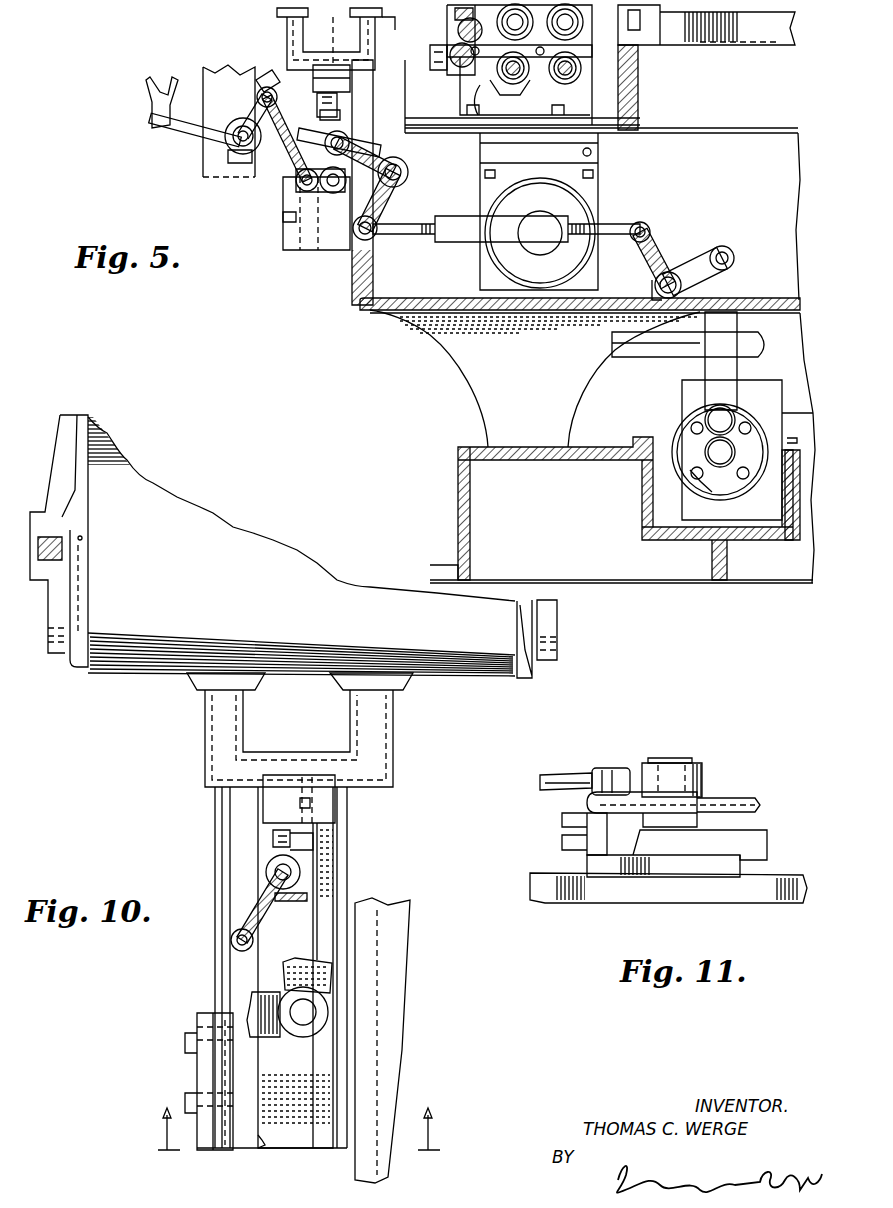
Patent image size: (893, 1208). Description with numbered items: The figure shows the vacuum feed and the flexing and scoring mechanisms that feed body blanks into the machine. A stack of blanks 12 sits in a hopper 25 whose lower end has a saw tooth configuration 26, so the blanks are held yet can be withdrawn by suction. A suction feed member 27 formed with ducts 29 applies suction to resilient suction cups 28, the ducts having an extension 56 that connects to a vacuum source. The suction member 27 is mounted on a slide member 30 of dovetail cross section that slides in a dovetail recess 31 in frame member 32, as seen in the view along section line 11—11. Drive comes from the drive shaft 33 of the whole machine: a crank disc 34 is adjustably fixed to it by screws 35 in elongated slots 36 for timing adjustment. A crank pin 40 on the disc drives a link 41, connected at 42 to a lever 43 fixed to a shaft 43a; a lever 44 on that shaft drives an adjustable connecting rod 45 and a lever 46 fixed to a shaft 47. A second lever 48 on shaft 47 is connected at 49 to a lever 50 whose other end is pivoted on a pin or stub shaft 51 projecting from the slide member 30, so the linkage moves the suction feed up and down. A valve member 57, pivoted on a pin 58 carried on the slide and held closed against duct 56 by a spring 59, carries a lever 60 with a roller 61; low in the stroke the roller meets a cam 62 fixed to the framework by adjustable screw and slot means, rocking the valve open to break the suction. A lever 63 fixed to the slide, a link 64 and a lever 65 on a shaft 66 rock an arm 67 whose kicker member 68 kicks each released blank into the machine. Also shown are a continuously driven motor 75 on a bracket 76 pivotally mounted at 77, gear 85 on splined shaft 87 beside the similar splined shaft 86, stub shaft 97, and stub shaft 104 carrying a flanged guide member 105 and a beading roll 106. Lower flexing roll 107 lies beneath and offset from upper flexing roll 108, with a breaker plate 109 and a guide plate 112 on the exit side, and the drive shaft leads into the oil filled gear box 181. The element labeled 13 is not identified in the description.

In FIG. 10, the section line 11 is at (182, 760).
In FIG. 10, the body blank 12 is at (105, 672).
In FIG. 5, the upper bar 13 is at (396, 15).
In FIG. 10, the hopper 25 is at (557, 637).
In FIG. 10, the saw tooth configuration 26 is at (78, 667).
In FIG. 5, the suction feed member 27 is at (283, 34).
In FIG. 10, the suction feed member 27 is at (393, 749).
In FIG. 5, the suction cups 28 is at (277, 13).
In FIG. 10, the suction cups 28 is at (187, 680).
In FIG. 5, the ducts 29 is at (362, 40).
In FIG. 10, the ducts 29 is at (222, 717).
In FIG. 5, the slide member 30 is at (322, 248).
In FIG. 10, the slide member 30 is at (288, 1152).
In FIG. 11, the slide member 30 is at (650, 865).
In FIG. 5, the dovetail recess 31 is at (318, 240).
In FIG. 10, the dovetail recess 31 is at (265, 1152).
In FIG. 11, the dovetail recess 31 is at (700, 843).
In FIG. 5, the frame member 32 is at (356, 252).
In FIG. 10, the frame member 32 is at (343, 1145).
In FIG. 11, the frame member 32 is at (690, 880).
In FIG. 5, the drive shaft 33 is at (708, 450).
In FIG. 5, the crank disc 34 is at (760, 412).
In FIG. 5, the screws 35 is at (621, 496).
In FIG. 5, the elongated slots 36 is at (690, 465).
In FIG. 5, the crank pin 40 is at (708, 418).
In FIG. 5, the link 41 is at (745, 327).
In FIG. 5, the pivot connection 42 is at (735, 255).
In FIG. 5, the link or lever 43 is at (700, 265).
In FIG. 5, the shaft 43a is at (652, 292).
In FIG. 5, the lever 44 is at (645, 262).
In FIG. 5, the adjustable connecting rod 45 is at (452, 246).
In FIG. 5, the lever 46 is at (392, 198).
In FIG. 5, the shaft 47 is at (410, 170).
In FIG. 5, the second lever 48 is at (398, 146).
In FIG. 5, the pivot connection 49 is at (342, 138).
In FIG. 5, the lever 50 is at (330, 165).
In FIG. 10, the lever 50 is at (305, 966).
In FIG. 11, the lever 50 is at (703, 773).
In FIG. 5, the pin or stub shaft 51 is at (330, 190).
In FIG. 10, the pin or stub shaft 51 is at (305, 1022).
In FIG. 11, the pin or stub shaft 51 is at (672, 758).
In FIG. 5, the extension 56 is at (350, 80).
In FIG. 10, the extension 56 is at (337, 837).
In FIG. 5, the valve member 57 is at (320, 98).
In FIG. 10, the valve member 57 is at (276, 838).
In FIG. 5, the pin 58 is at (322, 106).
In FIG. 10, the pin 58 is at (273, 872).
In FIG. 10, the spring 59 is at (287, 903).
In FIG. 5, the lever 60 is at (258, 114).
In FIG. 10, the lever 60 is at (260, 905).
In FIG. 5, the roller 61 is at (292, 150).
In FIG. 10, the roller 61 is at (238, 948).
In FIG. 5, the cam 62 is at (292, 228).
In FIG. 10, the cam 62 is at (200, 1028).
In FIG. 11, the cam 62 is at (586, 805).
In FIG. 5, the lever 63 is at (300, 190).
In FIG. 10, the lever 63 is at (255, 1032).
In FIG. 11, the lever 63 is at (637, 790).
In FIG. 5, the link 64 is at (232, 180).
In FIG. 11, the link 64 is at (562, 780).
In FIG. 5, the lever 65 is at (262, 78).
In FIG. 5, the shaft 66 is at (226, 152).
In FIG. 5, the arm 67 is at (186, 126).
In FIG. 5, the kicker member 68 is at (150, 97).
In FIG. 5, the motor 75 is at (513, 270).
In FIG. 5, the bracket 76 is at (598, 194).
In FIG. 5, the pivot pin 77 is at (592, 153).
In FIG. 5, the gear 85 is at (590, 90).
In FIG. 5, the splined shaft 86 is at (548, 82).
In FIG. 5, the splined shaft 87 is at (578, 68).
In FIG. 5, the stub shaft 97 is at (458, 12).
In FIG. 5, the stub shaft 104 is at (525, 20).
In FIG. 5, the flanged guide member 105 is at (590, 42).
In FIG. 5, the beading roll 106 is at (578, 25).
In FIG. 5, the flexing roll 107 is at (452, 75).
In FIG. 5, the upper flexing roll 108 is at (450, 52).
In FIG. 5, the breaker plate 109 is at (458, 32).
In FIG. 5, the guide plate 112 is at (460, 100).
In FIG. 5, the gear box 181 is at (765, 390).